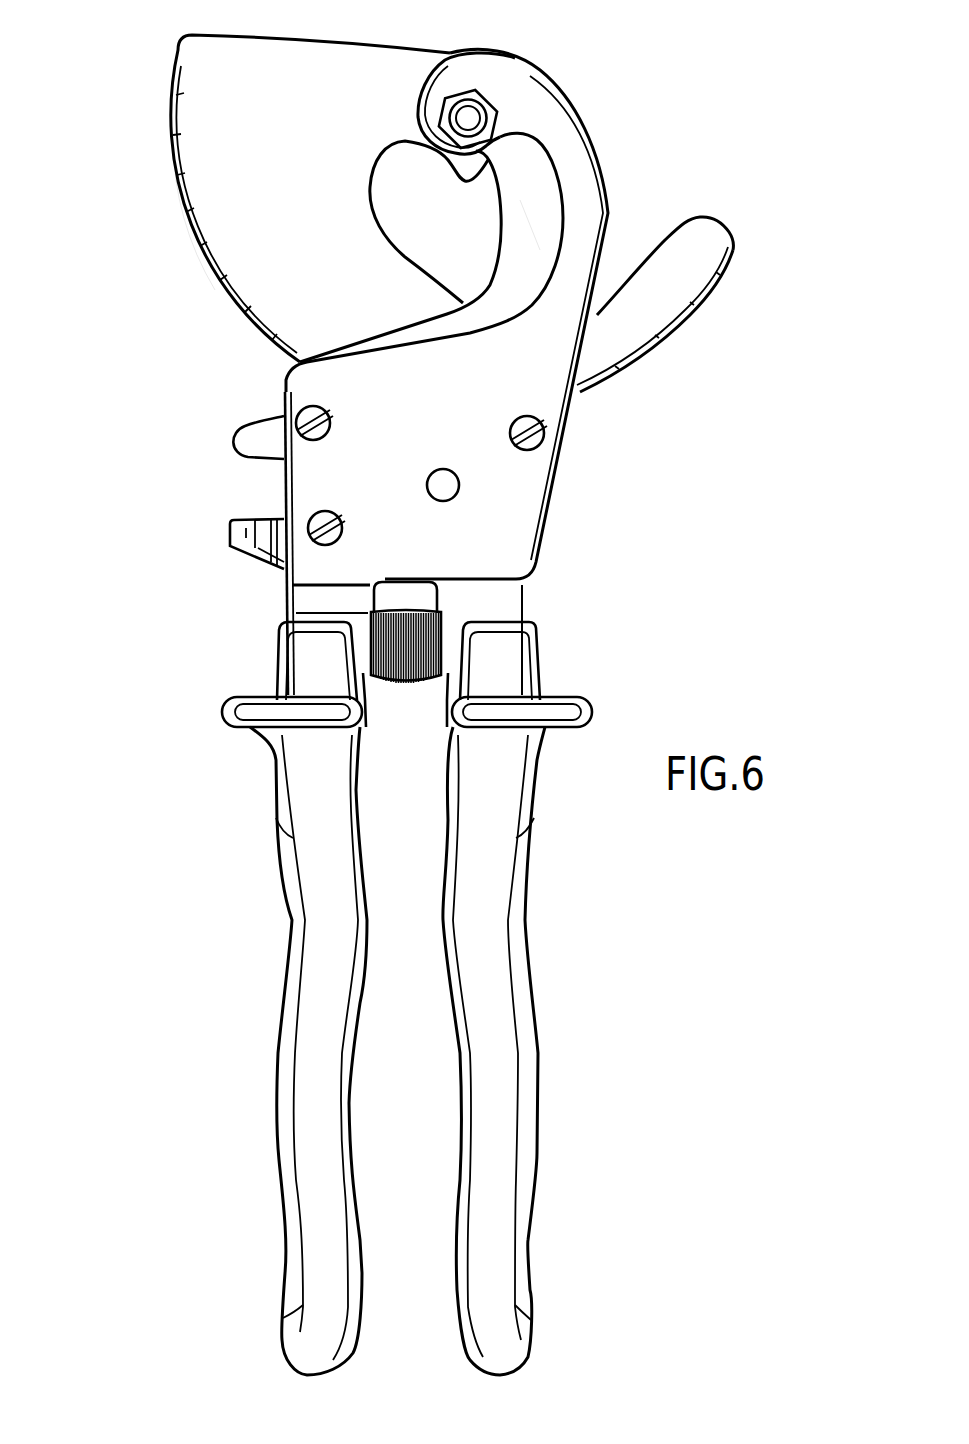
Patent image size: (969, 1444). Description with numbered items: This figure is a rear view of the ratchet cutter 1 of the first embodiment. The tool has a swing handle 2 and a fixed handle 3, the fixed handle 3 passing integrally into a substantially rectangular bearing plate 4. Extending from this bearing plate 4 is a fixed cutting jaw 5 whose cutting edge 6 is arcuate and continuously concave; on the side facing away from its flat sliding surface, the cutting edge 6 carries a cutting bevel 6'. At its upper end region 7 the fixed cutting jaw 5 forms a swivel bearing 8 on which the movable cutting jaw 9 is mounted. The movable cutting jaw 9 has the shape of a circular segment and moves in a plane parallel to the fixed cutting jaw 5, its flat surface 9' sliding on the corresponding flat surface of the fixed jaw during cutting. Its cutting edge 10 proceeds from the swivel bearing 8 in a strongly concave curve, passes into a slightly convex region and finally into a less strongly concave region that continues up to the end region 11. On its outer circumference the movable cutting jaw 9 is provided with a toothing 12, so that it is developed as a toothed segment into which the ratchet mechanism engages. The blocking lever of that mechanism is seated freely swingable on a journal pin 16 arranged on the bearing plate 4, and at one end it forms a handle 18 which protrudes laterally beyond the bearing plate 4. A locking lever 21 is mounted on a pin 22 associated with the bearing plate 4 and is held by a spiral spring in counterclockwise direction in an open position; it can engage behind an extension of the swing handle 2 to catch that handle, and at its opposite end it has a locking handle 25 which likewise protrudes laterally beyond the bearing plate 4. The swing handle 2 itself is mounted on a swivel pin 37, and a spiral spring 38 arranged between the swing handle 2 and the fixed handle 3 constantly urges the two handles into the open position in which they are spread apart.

The ratchet cutter 1 is at (150, 728).
The swing handle 2 is at (487, 985).
The fixed handle 3 is at (325, 938).
The bearing plate 4 is at (487, 507).
The fixed cutting jaw 5 is at (585, 244).
The cutting edge 6 is at (501, 237).
The cutting bevel 6' is at (618, 188).
The upper end region 7 is at (543, 100).
The swivel bearing 8 is at (468, 117).
The movable cutting jaw 9 is at (296, 198).
The flat surface 9' is at (163, 215).
The cutting edge 10 is at (370, 187).
The end region 11 is at (703, 237).
The toothing 12 is at (698, 309).
The journal pin 16 is at (278, 400).
The handle 18 is at (248, 440).
The locking lever 21 is at (245, 549).
The pin 22 is at (280, 572).
The locking handle 25 is at (242, 530).
The swivel pin 37 is at (443, 485).
The spiral spring 38 is at (404, 630).